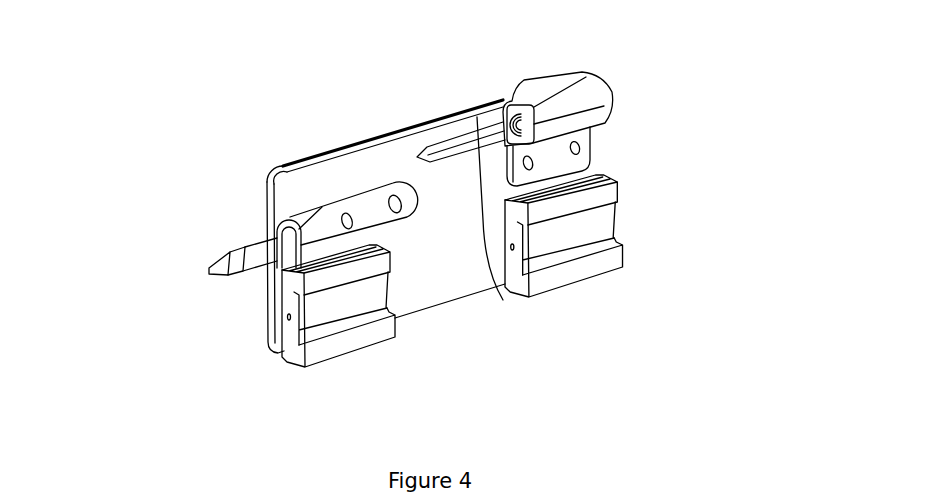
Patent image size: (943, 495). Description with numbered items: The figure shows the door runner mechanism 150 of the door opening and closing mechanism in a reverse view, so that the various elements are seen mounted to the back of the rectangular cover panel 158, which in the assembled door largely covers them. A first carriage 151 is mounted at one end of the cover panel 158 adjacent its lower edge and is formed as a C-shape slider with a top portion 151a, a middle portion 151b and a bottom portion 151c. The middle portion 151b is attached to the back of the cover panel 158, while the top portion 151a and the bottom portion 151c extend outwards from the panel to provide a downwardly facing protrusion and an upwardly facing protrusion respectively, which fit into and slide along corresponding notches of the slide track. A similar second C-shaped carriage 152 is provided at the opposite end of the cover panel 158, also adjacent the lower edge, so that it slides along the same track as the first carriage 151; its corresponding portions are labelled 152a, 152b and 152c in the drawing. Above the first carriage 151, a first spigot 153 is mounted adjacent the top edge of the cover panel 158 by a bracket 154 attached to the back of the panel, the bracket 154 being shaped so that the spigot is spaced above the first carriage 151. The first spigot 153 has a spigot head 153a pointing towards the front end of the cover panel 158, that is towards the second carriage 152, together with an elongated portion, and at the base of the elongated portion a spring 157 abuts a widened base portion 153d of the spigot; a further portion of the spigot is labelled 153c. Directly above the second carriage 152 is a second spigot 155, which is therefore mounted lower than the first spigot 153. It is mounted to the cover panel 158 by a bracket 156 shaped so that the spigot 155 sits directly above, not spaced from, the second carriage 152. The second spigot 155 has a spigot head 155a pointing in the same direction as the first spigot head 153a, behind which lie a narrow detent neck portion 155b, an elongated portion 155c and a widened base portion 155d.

The door runner mechanism 150 is at (479, 86).
The first carriage 151 is at (583, 289).
The top portion 151a is at (607, 192).
The middle portion 151b is at (610, 263).
The bottom portion 151c is at (603, 225).
The second carriage 152 is at (345, 366).
The clamp block upper jaw 152a is at (383, 259).
The clamp block lower jaw 152b is at (294, 358).
The clamp block recess 152c is at (305, 318).
The first spigot 153 is at (612, 86).
The spigot head 153a is at (427, 130).
The hinge leaf 153c is at (503, 300).
The widened base portion 153d is at (597, 80).
The bracket 154 is at (592, 143).
The second spigot 155 is at (228, 305).
The spigot head 155a is at (210, 266).
The detent neck portion 155b is at (240, 254).
The elongated portion 155c is at (261, 249).
The widened base portion 155d is at (313, 212).
The bracket 156 is at (366, 210).
The spring 157 is at (523, 78).
The cover panel 158 is at (291, 185).